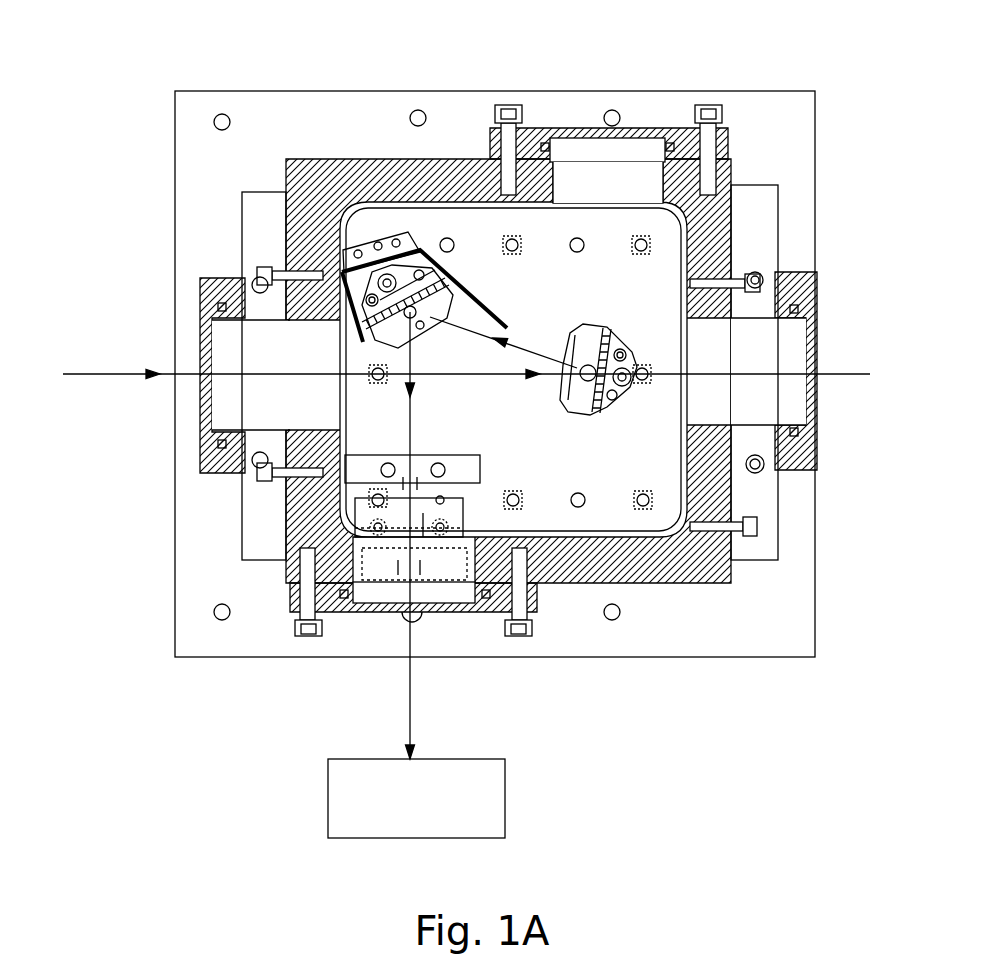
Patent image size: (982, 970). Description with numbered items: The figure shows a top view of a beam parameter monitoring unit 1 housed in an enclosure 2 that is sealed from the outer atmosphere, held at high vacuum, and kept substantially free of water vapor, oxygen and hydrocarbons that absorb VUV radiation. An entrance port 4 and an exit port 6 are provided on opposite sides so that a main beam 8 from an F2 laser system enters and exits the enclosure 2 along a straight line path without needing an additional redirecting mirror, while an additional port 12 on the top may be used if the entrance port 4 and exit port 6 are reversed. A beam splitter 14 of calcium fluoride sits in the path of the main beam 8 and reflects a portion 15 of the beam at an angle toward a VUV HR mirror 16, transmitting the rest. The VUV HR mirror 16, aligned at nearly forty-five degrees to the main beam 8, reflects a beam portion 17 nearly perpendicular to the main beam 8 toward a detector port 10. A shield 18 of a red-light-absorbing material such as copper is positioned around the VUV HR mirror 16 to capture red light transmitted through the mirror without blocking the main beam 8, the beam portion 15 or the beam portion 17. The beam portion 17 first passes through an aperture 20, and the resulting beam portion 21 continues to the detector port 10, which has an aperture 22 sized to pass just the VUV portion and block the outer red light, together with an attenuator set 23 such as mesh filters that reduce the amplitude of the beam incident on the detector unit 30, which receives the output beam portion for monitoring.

The beam parameter monitoring unit 1 is at (540, 78).
The enclosure 2 is at (355, 158).
The entrance port 4 is at (205, 342).
The exit port 6 is at (815, 340).
The main beam 8 is at (120, 372).
The detector port 10 is at (447, 615).
The additional port 12 is at (632, 130).
The beam splitter 14 is at (593, 322).
The beam portion reflected from the beam splitter 15 is at (520, 336).
The VUV HR mirror 16 is at (432, 332).
The beam portion reflected from the VUV HR mirror 17 is at (397, 432).
The shield 18 is at (458, 280).
The aperture 20 is at (428, 465).
The beam portion passing through the aperture 21 is at (420, 505).
The aperture of the detector port 22 is at (400, 565).
The attenuator set 23 is at (423, 513).
The detector unit 30 is at (416, 798).